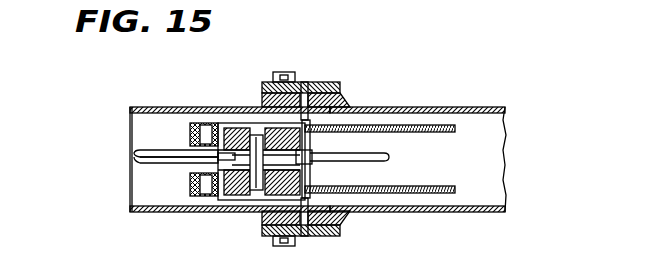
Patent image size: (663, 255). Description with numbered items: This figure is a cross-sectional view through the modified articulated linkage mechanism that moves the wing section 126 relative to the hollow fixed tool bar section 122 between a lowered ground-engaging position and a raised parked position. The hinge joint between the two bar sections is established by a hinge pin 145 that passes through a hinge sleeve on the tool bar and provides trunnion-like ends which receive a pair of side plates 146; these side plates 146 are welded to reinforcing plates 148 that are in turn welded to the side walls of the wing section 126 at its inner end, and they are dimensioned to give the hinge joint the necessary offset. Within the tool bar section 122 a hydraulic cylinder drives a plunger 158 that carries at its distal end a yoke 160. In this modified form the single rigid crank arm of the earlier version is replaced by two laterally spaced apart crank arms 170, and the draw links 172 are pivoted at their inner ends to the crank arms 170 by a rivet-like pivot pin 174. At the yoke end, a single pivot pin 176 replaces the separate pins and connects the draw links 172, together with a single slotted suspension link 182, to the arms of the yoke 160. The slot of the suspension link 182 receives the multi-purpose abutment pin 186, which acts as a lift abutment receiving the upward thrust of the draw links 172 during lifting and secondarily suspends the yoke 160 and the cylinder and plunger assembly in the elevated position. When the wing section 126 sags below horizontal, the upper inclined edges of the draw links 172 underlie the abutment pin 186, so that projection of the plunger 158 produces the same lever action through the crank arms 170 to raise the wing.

The tool bar section 122 is at (163, 107).
The wing section 126 is at (451, 101).
The hinge pin 145 is at (285, 72).
The side plates 146 is at (322, 82).
The reinforcing plates 148 is at (346, 95).
The plunger 158 is at (176, 163).
The yoke 160 is at (214, 151).
The crank arms 170 is at (456, 188).
The draw links 172 is at (240, 124).
The pivot pin 174 is at (208, 123).
The pivot pin 176 is at (258, 200).
The slotted suspension link 182 is at (389, 158).
The abutment pin 186 is at (311, 146).